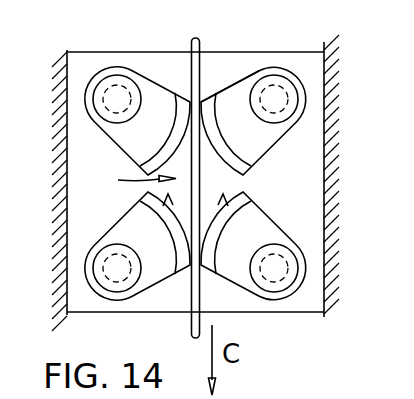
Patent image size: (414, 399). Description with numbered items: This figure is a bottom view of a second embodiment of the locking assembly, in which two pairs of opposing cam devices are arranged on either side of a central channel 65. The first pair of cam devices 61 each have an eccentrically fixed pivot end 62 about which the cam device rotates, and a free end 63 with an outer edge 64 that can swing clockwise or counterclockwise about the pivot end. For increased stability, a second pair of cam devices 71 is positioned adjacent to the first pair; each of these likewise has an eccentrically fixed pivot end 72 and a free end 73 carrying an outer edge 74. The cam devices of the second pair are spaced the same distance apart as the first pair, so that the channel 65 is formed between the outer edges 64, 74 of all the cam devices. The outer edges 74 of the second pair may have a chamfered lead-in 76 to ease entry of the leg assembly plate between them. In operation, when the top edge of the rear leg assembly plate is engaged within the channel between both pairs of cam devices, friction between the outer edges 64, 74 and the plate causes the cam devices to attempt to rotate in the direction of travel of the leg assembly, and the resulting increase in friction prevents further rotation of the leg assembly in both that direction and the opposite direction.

The cam device 61 is at (279, 296).
The pivot end 62 is at (115, 275).
The free end 63 is at (138, 200).
The outer edge 64 is at (143, 207).
The channel 65 is at (132, 170).
The second pair of cam devices 71 is at (163, 87).
The pivot end 72 is at (117, 92).
The free end 73 is at (228, 85).
The outer edge 74 is at (216, 191).
The chamfered lead-in 76 is at (238, 158).